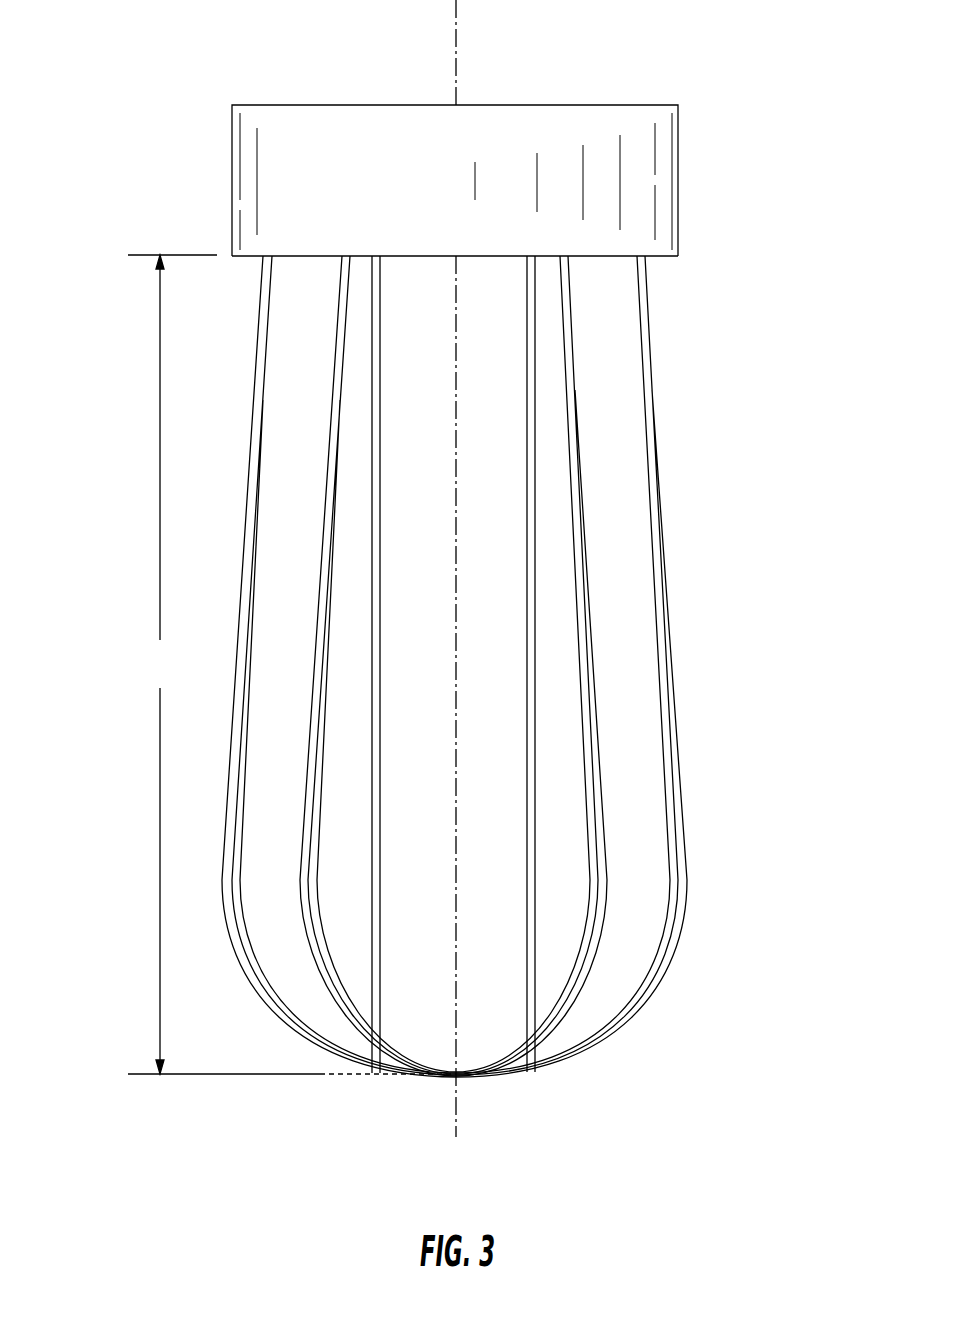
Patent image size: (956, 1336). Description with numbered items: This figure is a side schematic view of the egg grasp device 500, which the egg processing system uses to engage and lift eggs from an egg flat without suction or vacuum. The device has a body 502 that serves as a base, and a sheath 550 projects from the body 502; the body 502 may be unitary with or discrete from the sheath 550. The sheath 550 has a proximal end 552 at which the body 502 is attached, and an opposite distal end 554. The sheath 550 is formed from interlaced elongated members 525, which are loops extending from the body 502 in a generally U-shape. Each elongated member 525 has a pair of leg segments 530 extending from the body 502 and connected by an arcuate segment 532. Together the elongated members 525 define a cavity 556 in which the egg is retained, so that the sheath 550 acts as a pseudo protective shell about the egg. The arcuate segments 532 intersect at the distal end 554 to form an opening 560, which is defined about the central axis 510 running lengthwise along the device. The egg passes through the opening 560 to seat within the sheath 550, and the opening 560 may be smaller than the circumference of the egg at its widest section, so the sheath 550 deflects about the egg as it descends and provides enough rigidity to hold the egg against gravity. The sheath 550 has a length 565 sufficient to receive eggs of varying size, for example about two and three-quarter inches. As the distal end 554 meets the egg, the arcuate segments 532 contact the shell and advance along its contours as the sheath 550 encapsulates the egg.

The egg grasp device 500 is at (136, 107).
The body 502 is at (648, 148).
The central axis 510 is at (456, 472).
The elongated members 525 is at (377, 543).
The leg segments 530 is at (655, 412).
The arcuate segment 532 is at (617, 1027).
The sheath 550 is at (489, 701).
The proximal end 552 is at (680, 279).
The distal end 554 is at (329, 1095).
The cavity 556 is at (489, 614).
The opening 560 is at (446, 1085).
The length 565 is at (292, 664).